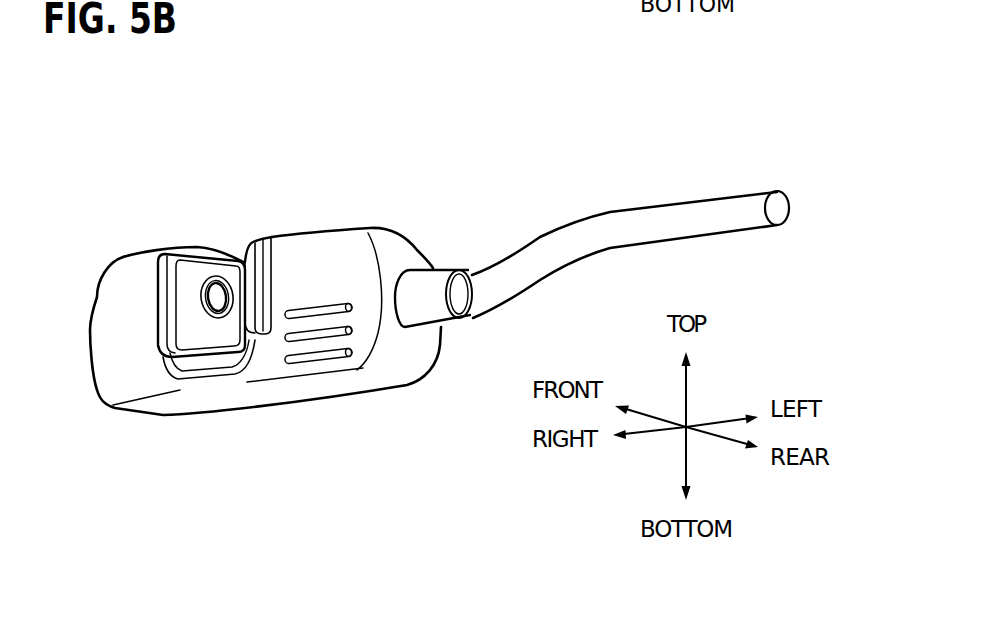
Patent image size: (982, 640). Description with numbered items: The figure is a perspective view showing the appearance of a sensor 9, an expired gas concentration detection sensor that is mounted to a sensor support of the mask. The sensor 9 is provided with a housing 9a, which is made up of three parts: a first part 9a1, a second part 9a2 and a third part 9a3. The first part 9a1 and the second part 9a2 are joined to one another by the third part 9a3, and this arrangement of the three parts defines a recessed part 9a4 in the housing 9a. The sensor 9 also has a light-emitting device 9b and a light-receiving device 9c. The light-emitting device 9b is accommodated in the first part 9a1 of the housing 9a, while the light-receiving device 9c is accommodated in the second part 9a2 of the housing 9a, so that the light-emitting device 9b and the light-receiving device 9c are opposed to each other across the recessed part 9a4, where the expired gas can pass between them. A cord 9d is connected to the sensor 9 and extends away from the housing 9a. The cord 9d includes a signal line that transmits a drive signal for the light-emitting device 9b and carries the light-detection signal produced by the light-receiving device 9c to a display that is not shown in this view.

The sensor 9 is at (128, 216).
The housing 9a is at (272, 484).
The first part 9a1 is at (125, 372).
The second part 9a2 is at (318, 347).
The third part 9a3 is at (233, 367).
The recessed part 9a4 is at (217, 345).
The light-emitting device 9b is at (197, 290).
The light-receiving device 9c is at (295, 263).
The cord 9d is at (510, 270).